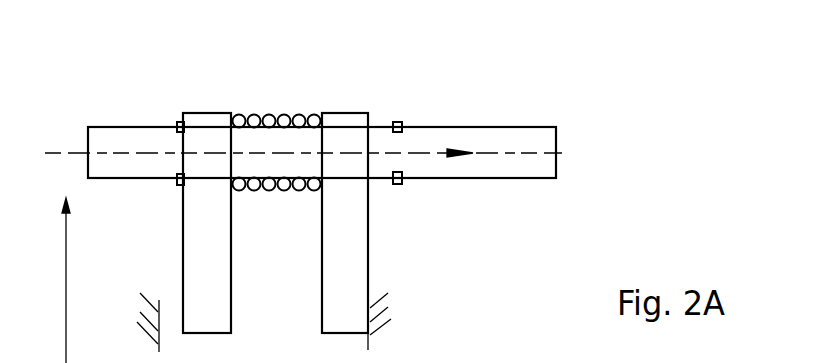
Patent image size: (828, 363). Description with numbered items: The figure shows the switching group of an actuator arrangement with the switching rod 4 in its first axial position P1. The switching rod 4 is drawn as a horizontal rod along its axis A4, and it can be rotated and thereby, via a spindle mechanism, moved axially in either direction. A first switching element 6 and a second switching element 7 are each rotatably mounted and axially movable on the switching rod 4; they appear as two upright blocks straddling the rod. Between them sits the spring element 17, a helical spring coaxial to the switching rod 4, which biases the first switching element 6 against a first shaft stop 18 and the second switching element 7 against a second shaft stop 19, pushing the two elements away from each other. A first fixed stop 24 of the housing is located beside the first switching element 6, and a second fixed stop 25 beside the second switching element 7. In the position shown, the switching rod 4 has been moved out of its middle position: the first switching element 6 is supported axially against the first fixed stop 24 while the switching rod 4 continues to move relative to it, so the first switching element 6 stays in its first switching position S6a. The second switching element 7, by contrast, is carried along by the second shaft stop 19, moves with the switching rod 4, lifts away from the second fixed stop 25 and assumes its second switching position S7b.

The switching rod 4 is at (459, 137).
The rod axis / direction of movement A4 is at (518, 152).
The first switching element 6 is at (358, 228).
The second switching element 7 is at (218, 252).
The spring element 17 is at (271, 120).
The first shaft stop 18 is at (398, 120).
The second shaft stop 19 is at (178, 126).
The first fixed stop 24 is at (368, 318).
The second fixed stop 25 is at (160, 316).
The second switching position S7b is at (211, 89).
The first switching position S6a is at (353, 97).
The first axial position P1 is at (569, 220).